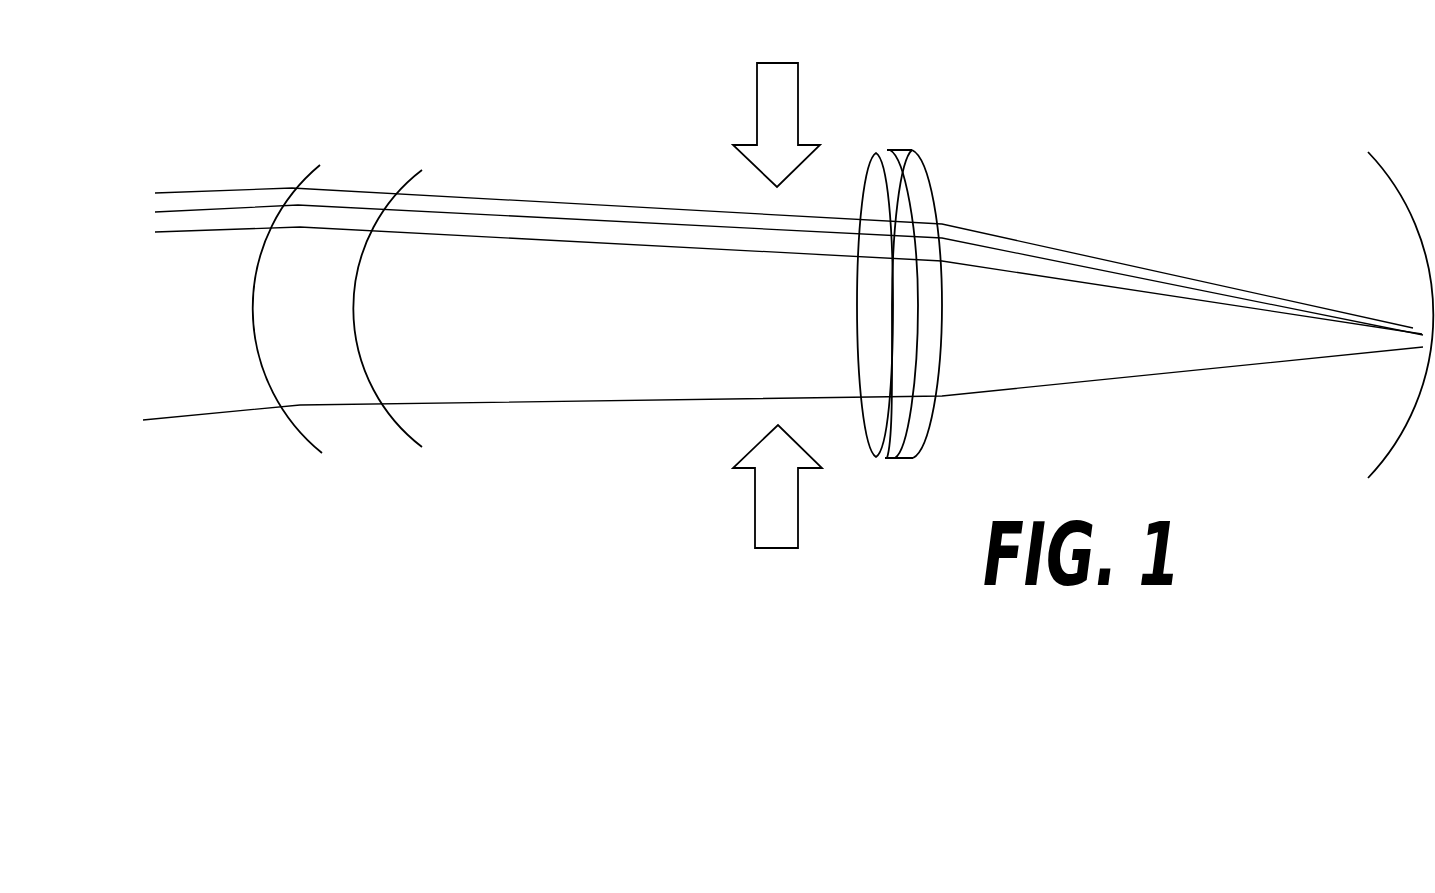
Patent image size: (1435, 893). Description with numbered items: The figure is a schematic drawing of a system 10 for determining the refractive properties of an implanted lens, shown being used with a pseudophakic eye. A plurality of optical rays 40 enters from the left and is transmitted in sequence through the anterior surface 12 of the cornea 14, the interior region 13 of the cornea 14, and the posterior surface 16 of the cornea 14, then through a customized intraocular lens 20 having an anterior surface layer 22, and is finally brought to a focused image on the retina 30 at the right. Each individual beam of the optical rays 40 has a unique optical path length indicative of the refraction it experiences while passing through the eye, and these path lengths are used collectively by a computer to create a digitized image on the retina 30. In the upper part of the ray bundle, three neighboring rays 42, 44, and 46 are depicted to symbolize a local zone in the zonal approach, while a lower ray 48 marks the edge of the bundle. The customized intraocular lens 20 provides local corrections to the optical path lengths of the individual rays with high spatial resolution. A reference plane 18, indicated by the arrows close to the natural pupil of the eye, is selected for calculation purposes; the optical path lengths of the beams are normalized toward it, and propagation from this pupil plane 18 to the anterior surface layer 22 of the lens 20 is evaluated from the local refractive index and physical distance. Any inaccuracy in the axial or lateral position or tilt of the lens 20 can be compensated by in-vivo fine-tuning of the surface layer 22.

The system for determining the refractive properties of an implanted lens 10 is at (587, 533).
The anterior surface of the cornea 12 is at (307, 170).
The interior region of the cornea 13 is at (328, 377).
The cornea 14 is at (360, 178).
The posterior surface of the cornea 16 is at (400, 157).
The reference plane 18 is at (768, 62).
The customized intraocular lens 20 is at (895, 147).
The anterior surface layer 22 is at (872, 167).
The retina 30 is at (1388, 160).
The plurality of optical rays 40 is at (603, 187).
The neighboring ray 42 is at (197, 190).
The neighboring ray 44 is at (160, 212).
The neighboring ray 46 is at (173, 232).
The marginal light ray 48 is at (193, 420).